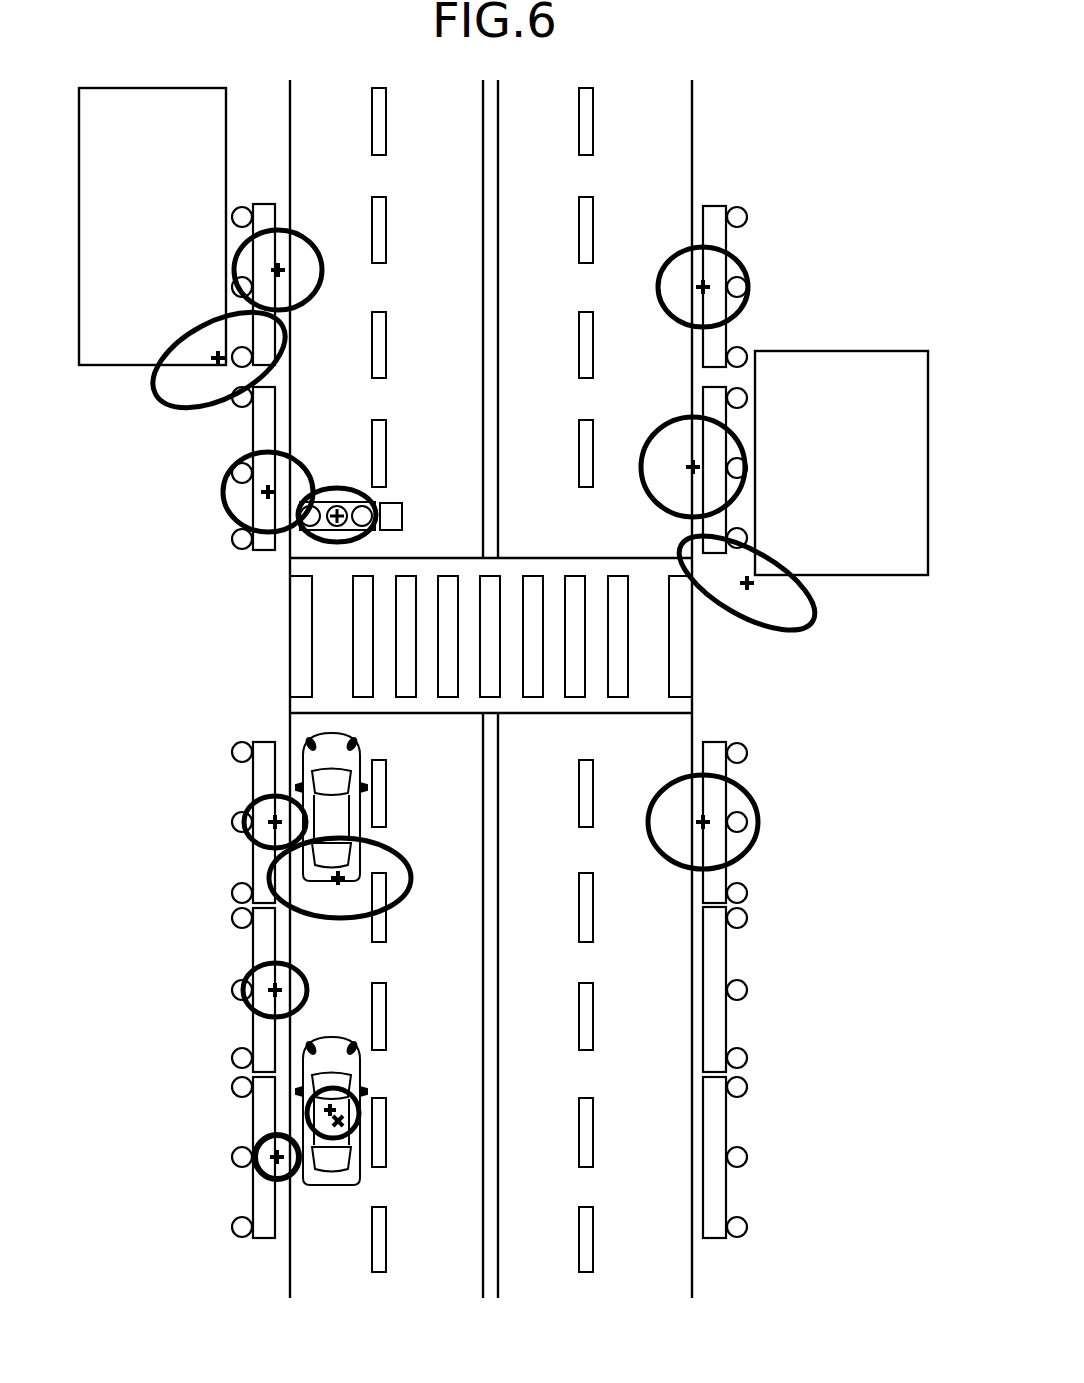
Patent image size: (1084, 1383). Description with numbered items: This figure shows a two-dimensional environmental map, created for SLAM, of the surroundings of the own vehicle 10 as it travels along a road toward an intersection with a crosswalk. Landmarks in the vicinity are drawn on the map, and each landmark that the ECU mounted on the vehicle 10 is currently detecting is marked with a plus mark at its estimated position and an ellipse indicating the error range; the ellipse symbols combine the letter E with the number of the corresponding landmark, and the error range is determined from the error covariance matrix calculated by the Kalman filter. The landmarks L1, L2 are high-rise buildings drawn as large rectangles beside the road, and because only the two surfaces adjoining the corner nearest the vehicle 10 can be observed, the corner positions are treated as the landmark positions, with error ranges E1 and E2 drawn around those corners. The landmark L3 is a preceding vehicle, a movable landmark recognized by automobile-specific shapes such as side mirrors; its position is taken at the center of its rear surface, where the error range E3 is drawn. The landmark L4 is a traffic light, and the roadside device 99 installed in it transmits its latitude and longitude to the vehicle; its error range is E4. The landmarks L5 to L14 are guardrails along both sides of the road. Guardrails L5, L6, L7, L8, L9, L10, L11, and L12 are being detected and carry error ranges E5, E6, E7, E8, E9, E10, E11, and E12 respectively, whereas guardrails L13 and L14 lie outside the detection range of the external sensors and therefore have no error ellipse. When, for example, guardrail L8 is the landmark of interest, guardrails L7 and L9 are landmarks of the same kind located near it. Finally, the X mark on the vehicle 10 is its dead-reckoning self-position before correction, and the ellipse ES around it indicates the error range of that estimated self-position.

The landmark L1 is at (120, 355).
The landmark L2 is at (895, 565).
The landmark L3 is at (360, 747).
The landmark L4 is at (373, 497).
The landmark L5 is at (268, 207).
The landmark L6 is at (230, 543).
The landmark L7 is at (257, 763).
The landmark L8 is at (255, 943).
The landmark L9 is at (258, 1183).
The landmark L10 is at (720, 215).
The landmark L11 is at (708, 405).
The landmark L12 is at (723, 773).
The landmark L13 is at (722, 962).
The landmark L14 is at (718, 1127).
The error range E1 is at (166, 405).
The error range E2 is at (778, 628).
The error range E3 is at (412, 878).
The error range E4 is at (342, 490).
The error range E5 is at (303, 257).
The error range E6 is at (237, 489).
The error range E7 is at (252, 842).
The error range E8 is at (308, 982).
The error range E9 is at (258, 1143).
The error range E10 is at (658, 287).
The error range E11 is at (653, 502).
The error range E12 is at (740, 807).
The error range ES is at (370, 1100).
The roadside device 99 is at (402, 515).
The vehicle 10 is at (333, 1187).